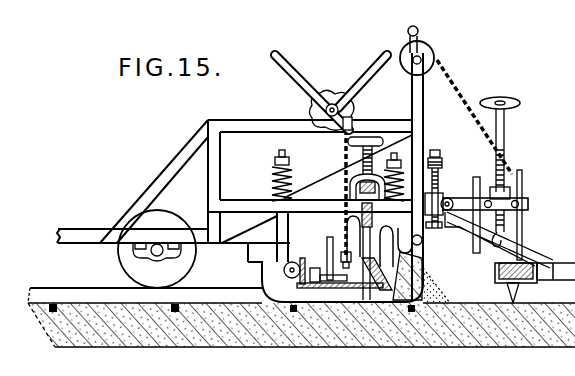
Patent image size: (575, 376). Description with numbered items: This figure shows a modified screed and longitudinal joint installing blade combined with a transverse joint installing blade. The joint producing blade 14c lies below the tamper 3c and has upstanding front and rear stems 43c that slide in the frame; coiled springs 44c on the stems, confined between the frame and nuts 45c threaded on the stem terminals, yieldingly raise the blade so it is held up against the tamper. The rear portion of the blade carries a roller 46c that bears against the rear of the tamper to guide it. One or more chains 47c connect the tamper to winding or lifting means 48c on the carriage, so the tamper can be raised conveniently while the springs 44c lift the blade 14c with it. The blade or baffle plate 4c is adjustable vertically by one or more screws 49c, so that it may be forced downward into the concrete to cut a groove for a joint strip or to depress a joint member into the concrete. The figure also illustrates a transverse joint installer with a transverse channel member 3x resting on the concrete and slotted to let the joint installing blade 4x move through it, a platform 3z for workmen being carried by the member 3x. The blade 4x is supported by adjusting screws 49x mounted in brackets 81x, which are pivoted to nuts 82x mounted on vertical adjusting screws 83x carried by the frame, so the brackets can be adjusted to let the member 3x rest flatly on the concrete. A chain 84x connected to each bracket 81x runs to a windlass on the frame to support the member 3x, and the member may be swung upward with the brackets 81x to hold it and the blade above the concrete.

The tamper 3c is at (314, 284).
The joint producing blade 14c is at (328, 300).
The blade or baffle plate 4c is at (367, 267).
The roller 46c is at (294, 263).
The chains 47c is at (343, 226).
The winding or lifting means 48c is at (313, 107).
The screws 49c is at (363, 134).
The front and rear stems 43c is at (278, 157).
The coiled springs 44c is at (273, 187).
The nuts 45c is at (290, 164).
The chain 84x is at (457, 92).
The adjusting screws 49x is at (504, 143).
The vertical adjusting screws 83x is at (441, 160).
The nuts 82x is at (444, 197).
The brackets 81x is at (528, 203).
The joint installing blade 4x is at (513, 246).
The transverse channel member 3x is at (554, 262).
The platform 3z is at (552, 279).